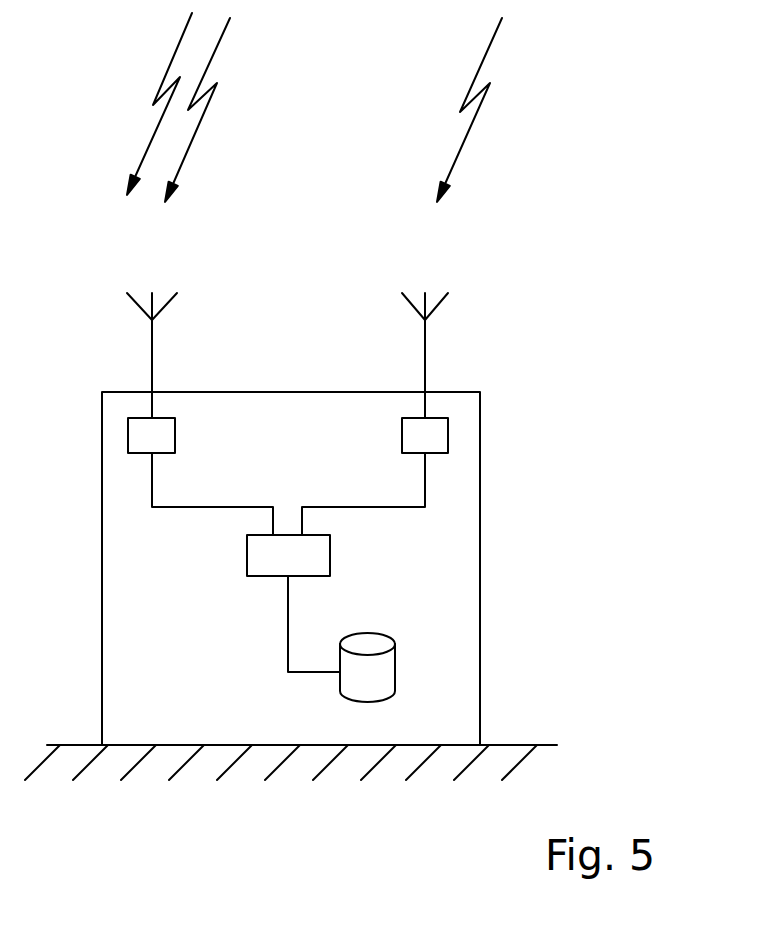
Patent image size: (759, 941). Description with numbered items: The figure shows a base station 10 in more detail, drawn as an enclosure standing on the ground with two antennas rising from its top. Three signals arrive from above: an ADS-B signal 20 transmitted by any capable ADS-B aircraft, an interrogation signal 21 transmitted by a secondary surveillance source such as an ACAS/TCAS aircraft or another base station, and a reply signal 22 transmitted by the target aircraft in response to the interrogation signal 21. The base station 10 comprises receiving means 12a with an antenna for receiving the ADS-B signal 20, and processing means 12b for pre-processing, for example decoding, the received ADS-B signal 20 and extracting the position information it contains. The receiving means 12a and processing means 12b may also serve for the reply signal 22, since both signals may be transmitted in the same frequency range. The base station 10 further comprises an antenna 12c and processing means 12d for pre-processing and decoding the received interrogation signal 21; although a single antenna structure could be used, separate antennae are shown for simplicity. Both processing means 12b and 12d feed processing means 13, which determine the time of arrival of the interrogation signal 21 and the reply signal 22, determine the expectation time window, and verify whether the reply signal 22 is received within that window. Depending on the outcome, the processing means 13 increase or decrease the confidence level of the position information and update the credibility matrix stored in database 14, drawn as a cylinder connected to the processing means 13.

The base station 10 is at (458, 563).
The receiving means 12a is at (152, 347).
The processing means 12b is at (160, 435).
The antenna 12c is at (425, 347).
The processing means 12d is at (422, 436).
The processing means 13 is at (310, 553).
The database 14 is at (383, 663).
The ADS-B signal 20 is at (195, 137).
The interrogation signal 21 is at (465, 137).
The reply signal 22 is at (173, 57).